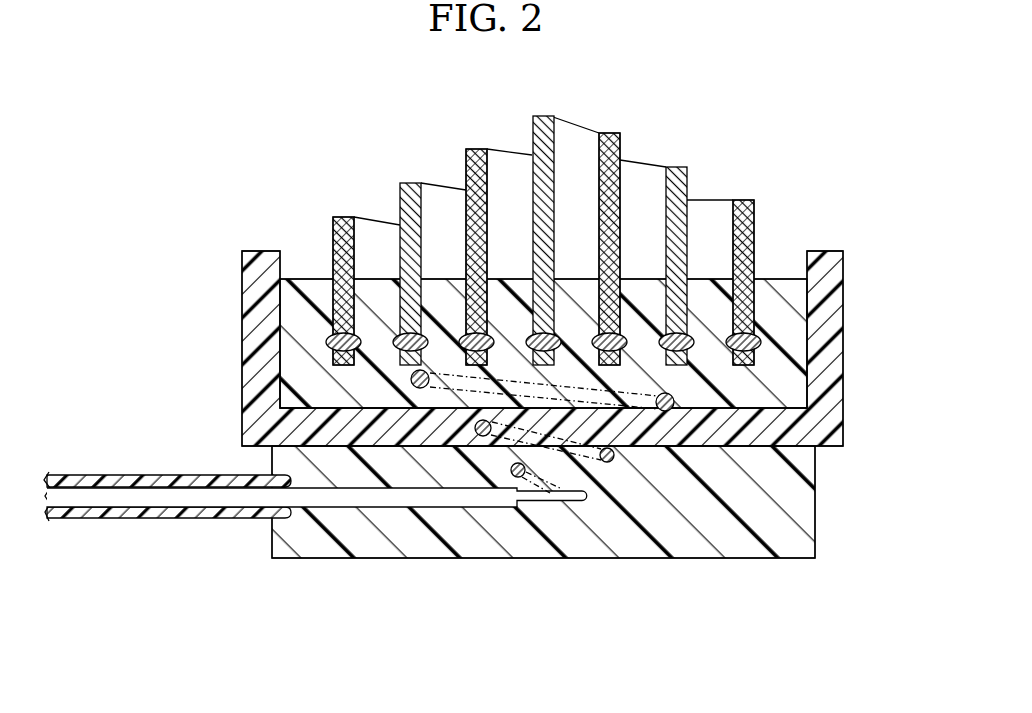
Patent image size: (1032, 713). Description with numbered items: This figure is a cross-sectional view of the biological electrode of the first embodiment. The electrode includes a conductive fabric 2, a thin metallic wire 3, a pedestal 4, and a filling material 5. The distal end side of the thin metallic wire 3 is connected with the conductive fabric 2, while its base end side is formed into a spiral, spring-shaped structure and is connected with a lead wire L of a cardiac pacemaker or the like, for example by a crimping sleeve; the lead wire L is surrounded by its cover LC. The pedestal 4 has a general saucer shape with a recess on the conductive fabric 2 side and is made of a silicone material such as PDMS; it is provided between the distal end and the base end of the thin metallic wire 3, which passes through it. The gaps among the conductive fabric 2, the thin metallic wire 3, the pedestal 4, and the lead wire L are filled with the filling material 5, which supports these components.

The conductive fabric 2 is at (541, 117).
The thin metallic wire 3 is at (761, 341).
The pedestal 4 is at (844, 296).
The filling material 5 is at (784, 356).
The lead wire L is at (370, 500).
The cover LC is at (163, 520).